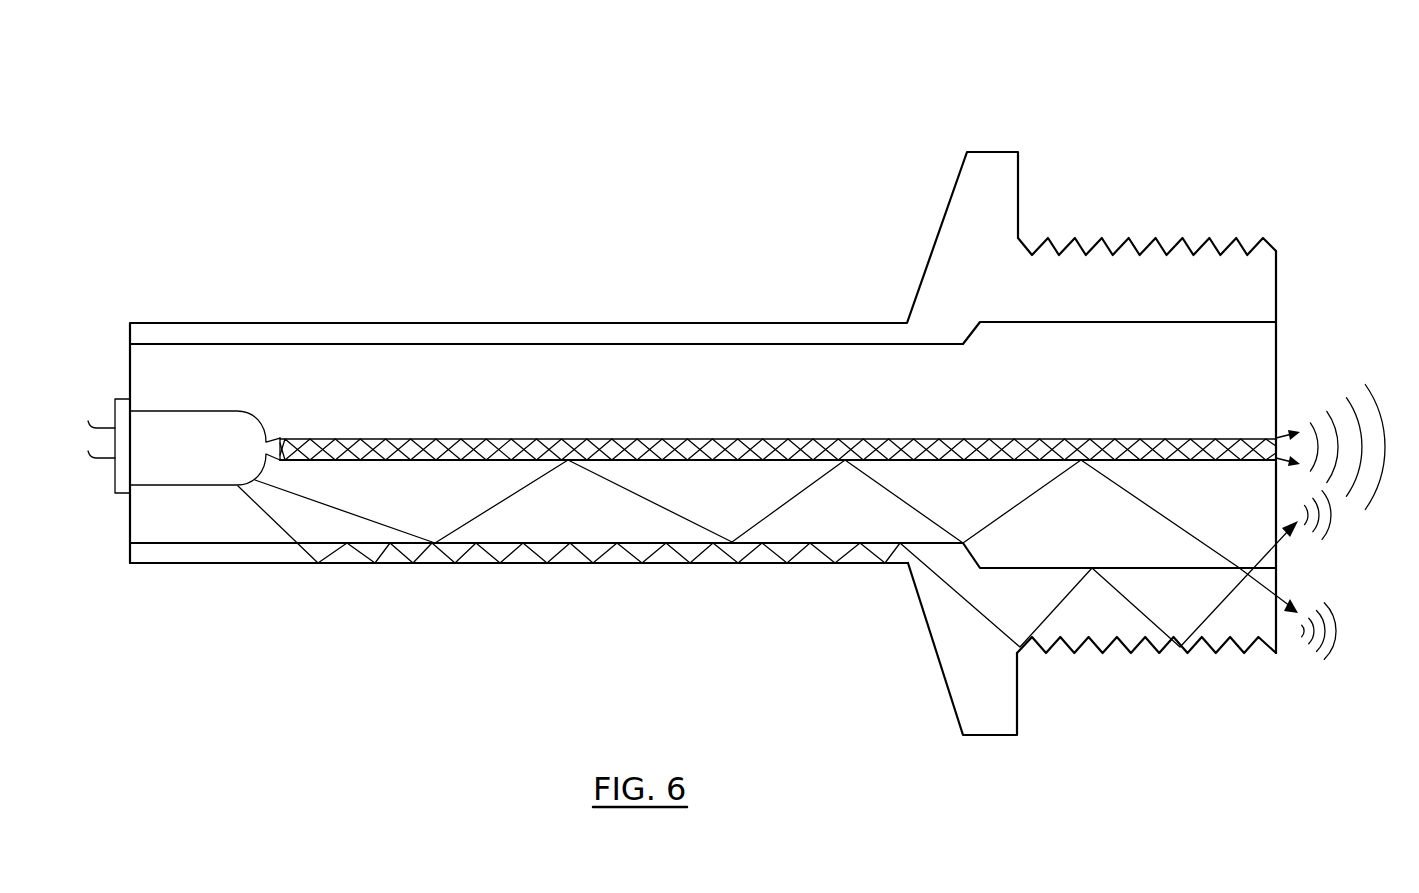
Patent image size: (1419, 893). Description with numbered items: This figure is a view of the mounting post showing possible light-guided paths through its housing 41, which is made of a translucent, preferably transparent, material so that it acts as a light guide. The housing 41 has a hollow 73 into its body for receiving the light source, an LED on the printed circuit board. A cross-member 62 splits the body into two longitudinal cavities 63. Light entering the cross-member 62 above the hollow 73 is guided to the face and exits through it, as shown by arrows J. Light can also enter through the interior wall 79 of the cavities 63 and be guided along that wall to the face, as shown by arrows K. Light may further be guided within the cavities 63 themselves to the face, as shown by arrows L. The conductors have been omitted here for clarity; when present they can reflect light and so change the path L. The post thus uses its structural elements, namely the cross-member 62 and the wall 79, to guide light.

The housing 41 is at (1094, 113).
The hollow 73 is at (264, 405).
The cross-member 62 is at (512, 438).
The cavities 63 is at (403, 497).
The interior wall 79 is at (952, 625).
The arrows J is at (683, 447).
The arrows K is at (487, 553).
The arrows L is at (658, 508).